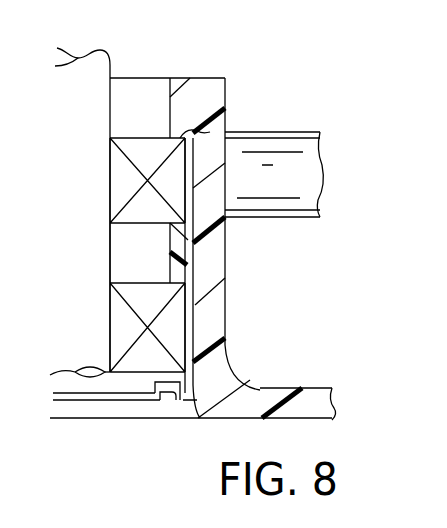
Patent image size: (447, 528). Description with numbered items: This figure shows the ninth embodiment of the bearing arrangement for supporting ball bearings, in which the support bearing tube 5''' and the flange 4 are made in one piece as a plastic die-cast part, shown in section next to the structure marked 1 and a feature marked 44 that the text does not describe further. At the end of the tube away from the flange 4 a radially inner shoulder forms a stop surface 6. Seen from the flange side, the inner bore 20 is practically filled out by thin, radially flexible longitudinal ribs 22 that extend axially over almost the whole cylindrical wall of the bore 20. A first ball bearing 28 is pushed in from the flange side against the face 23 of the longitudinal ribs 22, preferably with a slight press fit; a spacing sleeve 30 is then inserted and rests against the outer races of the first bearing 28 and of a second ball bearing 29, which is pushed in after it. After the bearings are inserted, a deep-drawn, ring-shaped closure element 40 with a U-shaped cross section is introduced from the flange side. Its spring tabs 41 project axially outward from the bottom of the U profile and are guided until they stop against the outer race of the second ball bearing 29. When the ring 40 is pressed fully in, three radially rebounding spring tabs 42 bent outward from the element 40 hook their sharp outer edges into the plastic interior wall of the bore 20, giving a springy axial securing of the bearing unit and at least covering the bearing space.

The wall 1 is at (82, 128).
The first ball bearing 28 is at (148, 150).
The support bearing tube 5''' is at (217, 220).
The stop surface 6 is at (205, 133).
The inner bore 20 is at (177, 253).
The spacing sleeve 30 is at (182, 243).
The face 23 is at (182, 266).
The second ball bearing 29 is at (177, 316).
The longitudinal ribs 22 is at (190, 323).
The spring tabs 41 is at (190, 372).
The flange 4 is at (325, 406).
The rebounding spring tabs 42 is at (198, 393).
The closure element 40 is at (168, 389).
The block 44 is at (184, 397).